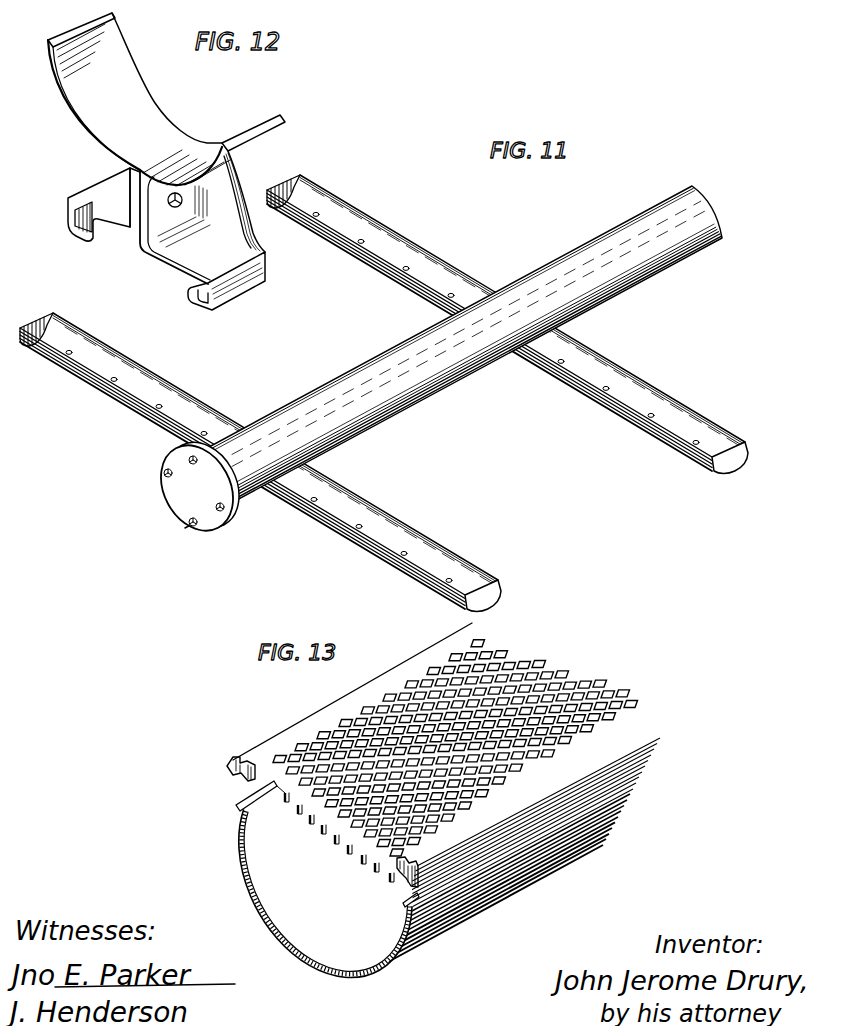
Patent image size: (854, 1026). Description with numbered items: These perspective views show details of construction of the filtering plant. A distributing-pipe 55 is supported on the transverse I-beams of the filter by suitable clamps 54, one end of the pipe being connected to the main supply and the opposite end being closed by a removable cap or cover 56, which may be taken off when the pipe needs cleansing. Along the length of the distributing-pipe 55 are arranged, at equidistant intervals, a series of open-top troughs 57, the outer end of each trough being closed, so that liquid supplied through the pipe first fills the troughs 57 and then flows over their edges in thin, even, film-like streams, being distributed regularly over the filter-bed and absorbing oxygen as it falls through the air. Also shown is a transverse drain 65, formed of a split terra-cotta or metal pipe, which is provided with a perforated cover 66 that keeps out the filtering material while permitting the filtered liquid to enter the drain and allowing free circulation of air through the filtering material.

In FIG. 12, the clamp 54 is at (166, 161).
In FIG. 11, the distributing-pipe 55 is at (453, 357).
In FIG. 11, the removable cap or cover 56 is at (188, 486).
In FIG. 11, the open-top trough 57 is at (384, 393).
In FIG. 13, the transverse drain 65 is at (432, 869).
In FIG. 13, the perforated cover 66 is at (422, 755).